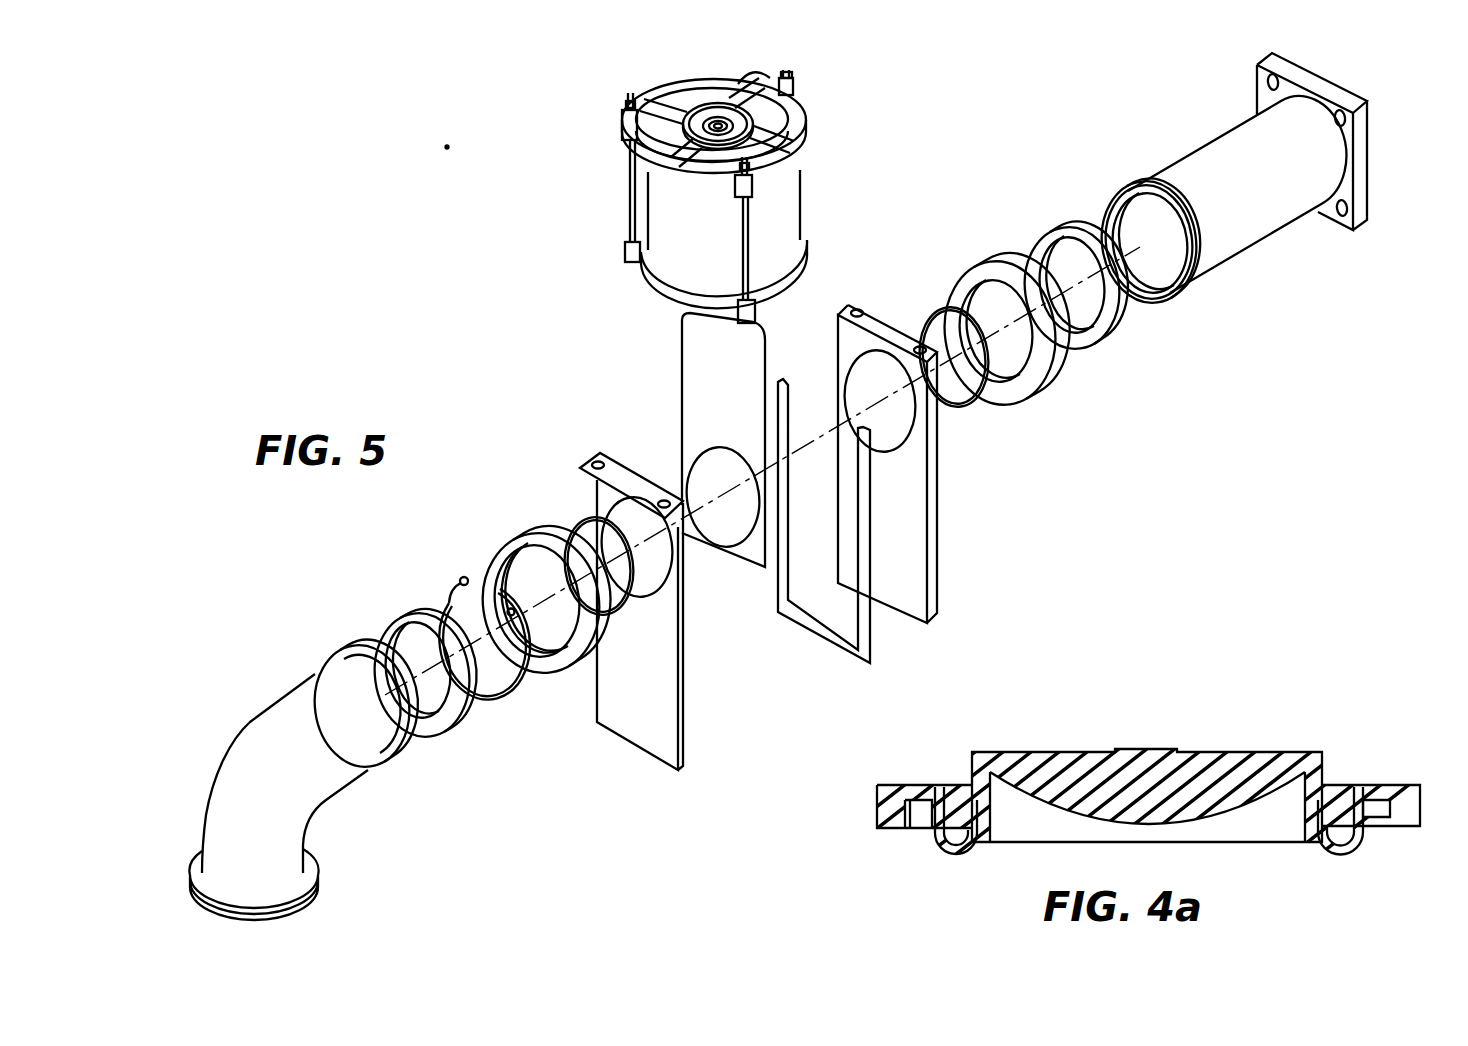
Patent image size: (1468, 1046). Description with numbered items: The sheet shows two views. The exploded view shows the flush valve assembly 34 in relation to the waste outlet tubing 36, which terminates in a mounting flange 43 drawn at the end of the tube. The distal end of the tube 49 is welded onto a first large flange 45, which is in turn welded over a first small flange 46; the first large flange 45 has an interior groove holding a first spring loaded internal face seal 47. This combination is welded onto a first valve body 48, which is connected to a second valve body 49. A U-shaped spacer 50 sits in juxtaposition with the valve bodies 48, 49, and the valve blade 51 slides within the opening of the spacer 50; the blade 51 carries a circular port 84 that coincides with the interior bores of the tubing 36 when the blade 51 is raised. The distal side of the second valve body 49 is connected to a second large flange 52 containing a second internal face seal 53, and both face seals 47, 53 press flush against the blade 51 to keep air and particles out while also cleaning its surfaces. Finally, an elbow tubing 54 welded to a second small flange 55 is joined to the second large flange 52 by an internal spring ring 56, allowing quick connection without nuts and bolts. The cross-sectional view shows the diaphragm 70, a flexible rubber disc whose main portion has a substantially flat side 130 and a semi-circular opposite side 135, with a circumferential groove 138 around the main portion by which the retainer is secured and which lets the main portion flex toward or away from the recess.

In FIG. 5, the flush valve assembly 34 is at (840, 175).
In FIG. 5, the waste outlet tubing 36 is at (1190, 368).
In FIG. 5, the mounting flange 43 is at (1368, 160).
In FIG. 5, the first large flange 45 is at (985, 262).
In FIG. 5, the first small flange 46 is at (1045, 228).
In FIG. 5, the first spring loaded internal face seal 47 is at (935, 312).
In FIG. 5, the first valve body 48 is at (933, 605).
In FIG. 5, the tube / second valve body 49 is at (688, 732).
In FIG. 5, the U-shaped spacer 50 is at (873, 637).
In FIG. 5, the valve blade 51 is at (694, 465).
In FIG. 5, the second large flange 52 is at (520, 527).
In FIG. 5, the second internal face seal 53 is at (583, 515).
In FIG. 5, the elbow tubing 54 is at (307, 683).
In FIG. 5, the second small flange 55 is at (403, 607).
In FIG. 5, the internal spring ring 56 is at (460, 572).
In FIG. 5, the circular port 84 is at (728, 535).
In FIG. 4A, the diaphragm 70 is at (1095, 771).
In FIG. 4A, the flat side 130 is at (1148, 802).
In FIG. 4A, the semi-circular opposite side 135 is at (1213, 818).
In FIG. 4A, the circumferential groove 138 is at (932, 838).